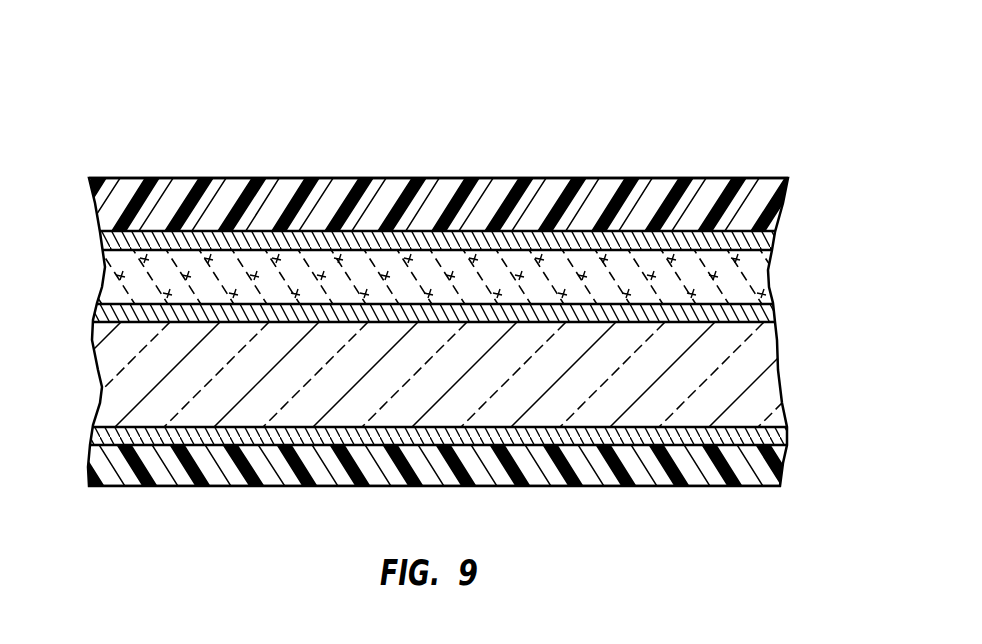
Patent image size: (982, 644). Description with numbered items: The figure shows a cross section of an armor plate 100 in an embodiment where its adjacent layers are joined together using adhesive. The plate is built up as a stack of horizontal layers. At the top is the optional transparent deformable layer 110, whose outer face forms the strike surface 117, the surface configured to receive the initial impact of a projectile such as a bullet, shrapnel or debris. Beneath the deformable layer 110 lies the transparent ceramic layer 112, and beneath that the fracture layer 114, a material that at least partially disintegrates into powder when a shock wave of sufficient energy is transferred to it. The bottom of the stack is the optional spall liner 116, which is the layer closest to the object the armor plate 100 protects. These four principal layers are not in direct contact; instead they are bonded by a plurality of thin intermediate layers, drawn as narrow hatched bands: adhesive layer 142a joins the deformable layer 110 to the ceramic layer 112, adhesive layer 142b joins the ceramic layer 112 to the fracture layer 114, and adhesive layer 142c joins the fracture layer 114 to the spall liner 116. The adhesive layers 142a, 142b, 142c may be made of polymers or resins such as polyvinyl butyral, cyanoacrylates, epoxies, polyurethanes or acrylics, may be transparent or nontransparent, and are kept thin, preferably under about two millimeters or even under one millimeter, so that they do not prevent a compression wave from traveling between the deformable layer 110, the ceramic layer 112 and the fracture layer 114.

The armor plate 100 is at (617, 96).
The deformable layer 110 is at (788, 208).
The ceramic layer 112 is at (770, 278).
The fracture layer 114 is at (778, 373).
The spall liner 116 is at (782, 472).
The strike surface 117 is at (679, 177).
The adhesive layer 142a is at (777, 241).
The adhesive layer 142b is at (775, 312).
The adhesive layer 142c is at (788, 437).